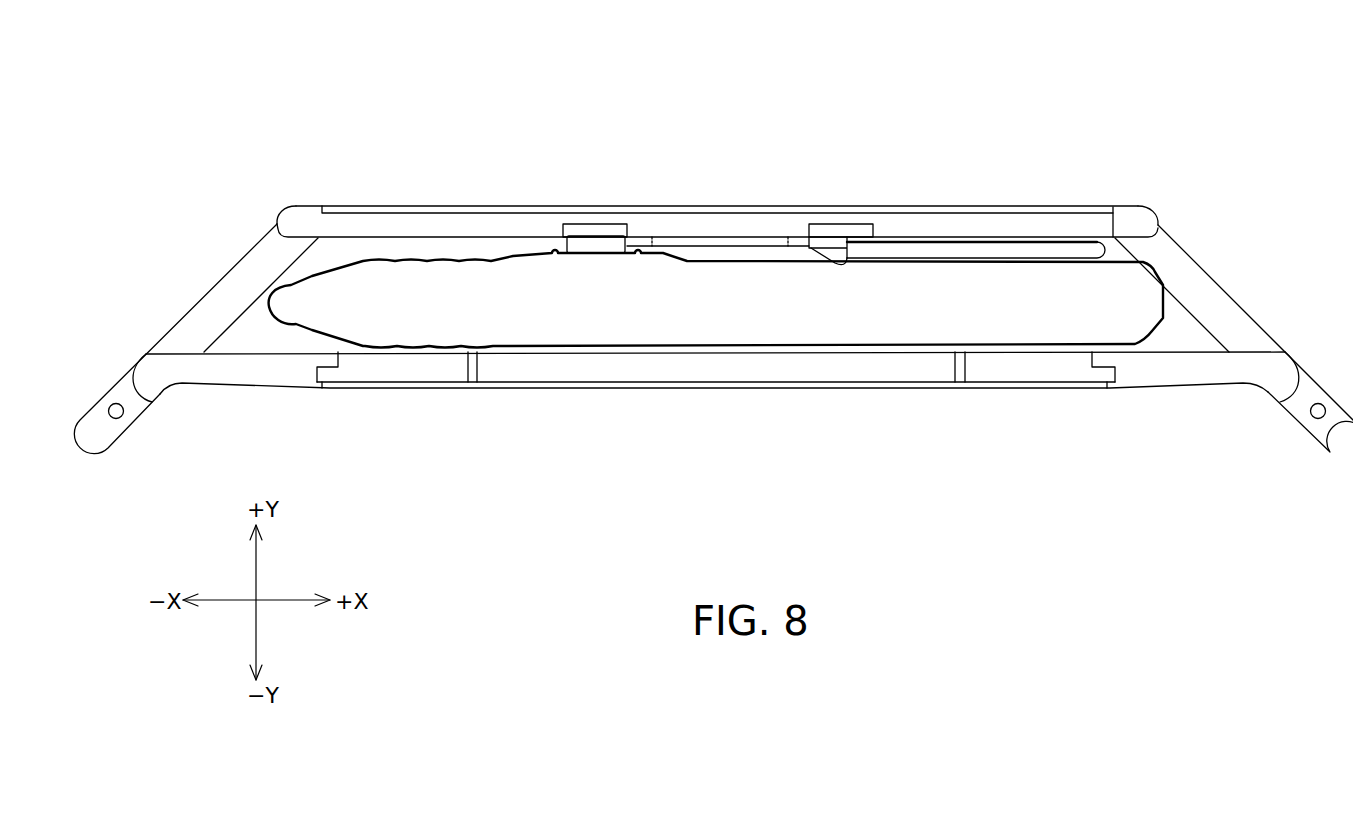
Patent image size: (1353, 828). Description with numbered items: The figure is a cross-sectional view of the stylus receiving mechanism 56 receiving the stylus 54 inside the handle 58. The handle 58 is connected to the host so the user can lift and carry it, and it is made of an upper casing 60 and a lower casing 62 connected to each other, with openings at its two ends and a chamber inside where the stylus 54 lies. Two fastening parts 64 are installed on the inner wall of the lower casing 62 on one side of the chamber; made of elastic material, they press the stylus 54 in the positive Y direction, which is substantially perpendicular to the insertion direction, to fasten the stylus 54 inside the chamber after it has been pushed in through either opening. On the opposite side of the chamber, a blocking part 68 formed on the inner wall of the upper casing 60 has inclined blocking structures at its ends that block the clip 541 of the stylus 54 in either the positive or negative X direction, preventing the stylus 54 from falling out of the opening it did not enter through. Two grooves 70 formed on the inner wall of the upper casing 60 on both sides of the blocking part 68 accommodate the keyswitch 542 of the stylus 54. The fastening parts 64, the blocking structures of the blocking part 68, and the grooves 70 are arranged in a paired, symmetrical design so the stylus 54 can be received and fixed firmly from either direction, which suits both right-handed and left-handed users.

The stylus receiving mechanism 56 is at (1081, 134).
The handle 58 is at (1321, 229).
The upper casing 60 is at (1147, 224).
The lower casing 62 is at (1252, 367).
The fastening part 64 is at (475, 360).
The stylus 54 is at (767, 323).
The clip 541 is at (827, 247).
The keyswitch 542 is at (597, 247).
The blocking part 68 is at (732, 245).
The groove 70 is at (613, 229).